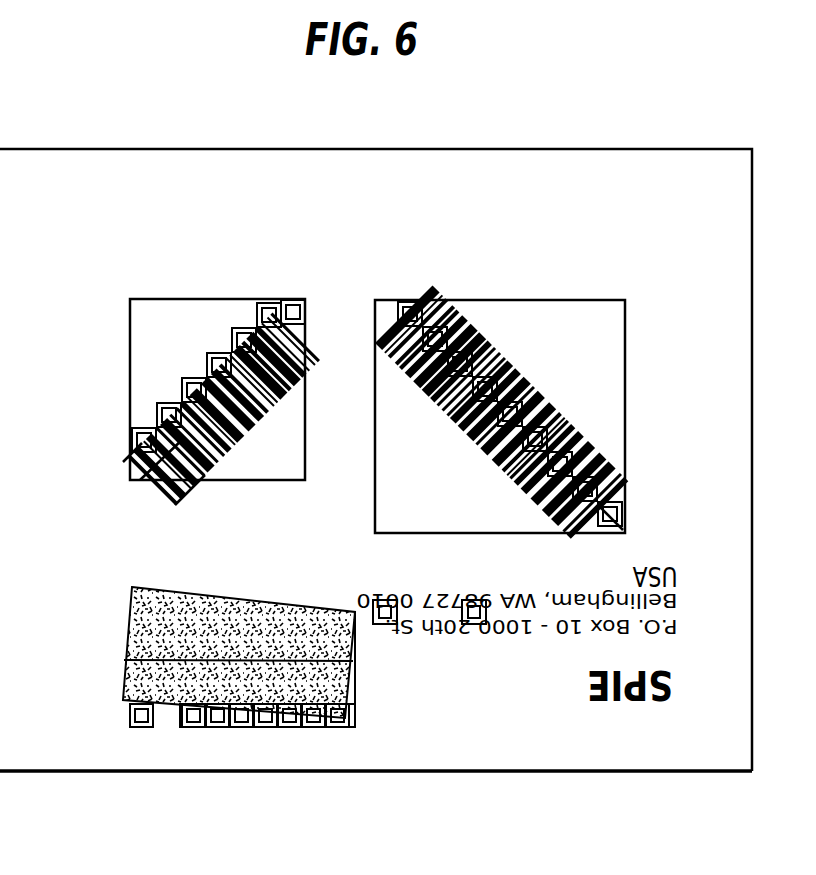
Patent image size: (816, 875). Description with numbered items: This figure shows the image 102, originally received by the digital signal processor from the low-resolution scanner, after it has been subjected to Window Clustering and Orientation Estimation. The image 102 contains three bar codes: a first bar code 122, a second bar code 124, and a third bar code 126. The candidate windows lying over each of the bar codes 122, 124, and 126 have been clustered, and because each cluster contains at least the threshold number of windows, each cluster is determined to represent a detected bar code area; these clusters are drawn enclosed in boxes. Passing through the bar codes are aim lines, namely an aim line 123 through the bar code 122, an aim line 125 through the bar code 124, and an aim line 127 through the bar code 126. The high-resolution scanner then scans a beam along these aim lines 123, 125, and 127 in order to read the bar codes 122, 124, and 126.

The image 102 is at (153, 121).
The bar code 122 is at (122, 299).
The aim line 123 is at (288, 308).
The bar code 124 is at (632, 300).
The aim line 125 is at (610, 532).
The bar code 126 is at (358, 625).
The aim line 127 is at (355, 727).